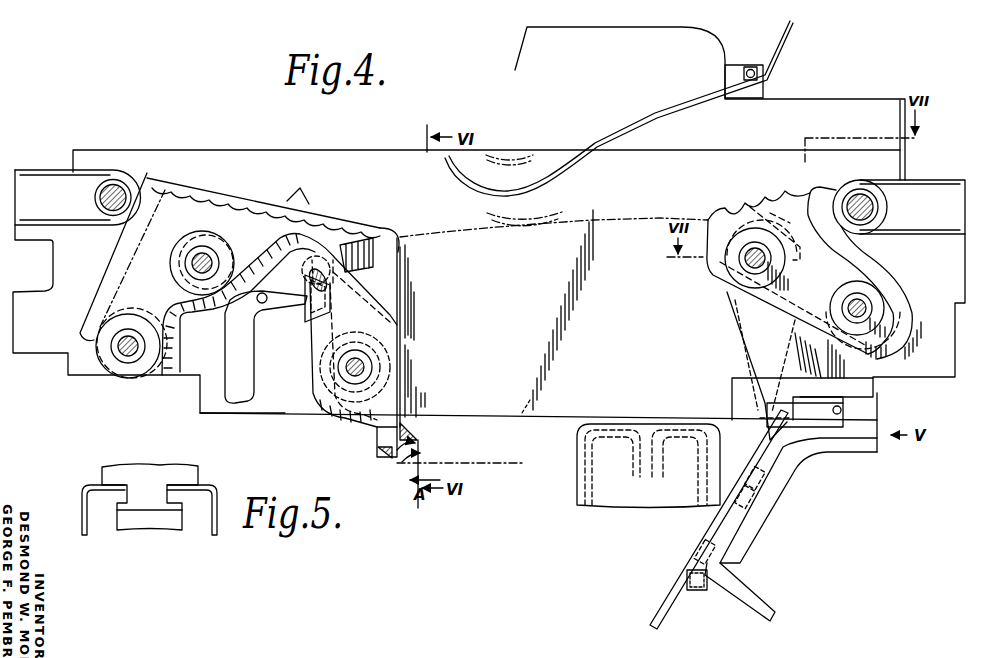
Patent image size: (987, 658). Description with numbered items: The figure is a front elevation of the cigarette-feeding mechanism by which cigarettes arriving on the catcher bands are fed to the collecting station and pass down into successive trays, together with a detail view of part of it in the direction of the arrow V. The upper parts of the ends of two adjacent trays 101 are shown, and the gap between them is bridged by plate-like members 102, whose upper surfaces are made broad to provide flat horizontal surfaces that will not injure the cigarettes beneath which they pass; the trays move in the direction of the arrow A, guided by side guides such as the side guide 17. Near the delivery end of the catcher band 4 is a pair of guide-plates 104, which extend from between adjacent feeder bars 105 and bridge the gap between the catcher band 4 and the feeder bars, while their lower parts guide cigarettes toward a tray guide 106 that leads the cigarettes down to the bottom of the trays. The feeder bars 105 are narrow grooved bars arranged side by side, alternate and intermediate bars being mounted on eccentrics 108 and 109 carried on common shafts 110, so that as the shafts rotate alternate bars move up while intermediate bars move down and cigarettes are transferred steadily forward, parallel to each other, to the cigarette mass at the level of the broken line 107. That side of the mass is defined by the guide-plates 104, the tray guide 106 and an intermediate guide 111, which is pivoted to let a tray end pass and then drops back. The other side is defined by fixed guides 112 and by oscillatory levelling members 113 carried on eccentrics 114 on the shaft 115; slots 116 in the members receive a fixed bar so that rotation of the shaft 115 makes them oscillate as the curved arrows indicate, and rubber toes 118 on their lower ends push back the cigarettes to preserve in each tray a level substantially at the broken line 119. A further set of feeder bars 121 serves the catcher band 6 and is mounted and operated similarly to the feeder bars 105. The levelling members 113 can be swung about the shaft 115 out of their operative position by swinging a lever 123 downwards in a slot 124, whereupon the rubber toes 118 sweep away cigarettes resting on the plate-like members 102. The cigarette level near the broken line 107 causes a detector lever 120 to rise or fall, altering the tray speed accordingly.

In FIG. 4, the catcher band 4 is at (918, 180).
In FIG. 4, the catcher band 6 is at (43, 170).
In FIG. 4, the side guide 17 is at (322, 268).
In FIG. 4, the tray 101 is at (578, 436).
In FIG. 4, the plate-like member 102 is at (607, 460).
In FIG. 5, the plate-like member 102 is at (82, 503).
In FIG. 4, the guide-plate 104 is at (825, 190).
In FIG. 4, the feeder bar 105 is at (773, 192).
In FIG. 4, the tray guide 106 is at (693, 565).
In FIG. 4, the broken line 107 is at (642, 219).
In FIG. 4, the eccentric 108 is at (737, 258).
In FIG. 4, the eccentric 109 is at (753, 233).
In FIG. 4, the shaft 110 is at (855, 302).
In FIG. 4, the intermediate guide 111 is at (760, 423).
In FIG. 4, the fixed guide 112 is at (392, 287).
In FIG. 4, the levelling member 113 is at (405, 368).
In FIG. 4, the eccentric 114 is at (340, 397).
In FIG. 4, the shaft 115 is at (362, 366).
In FIG. 4, the slot 116 is at (330, 313).
In FIG. 4, the rubber toe 118 is at (420, 434).
In FIG. 4, the broken line 119 is at (470, 463).
In FIG. 4, the detector lever 120 is at (629, 137).
In FIG. 4, the feeder bar 121 is at (294, 200).
In FIG. 4, the lever 123 is at (240, 318).
In FIG. 4, the slot 124 is at (227, 382).